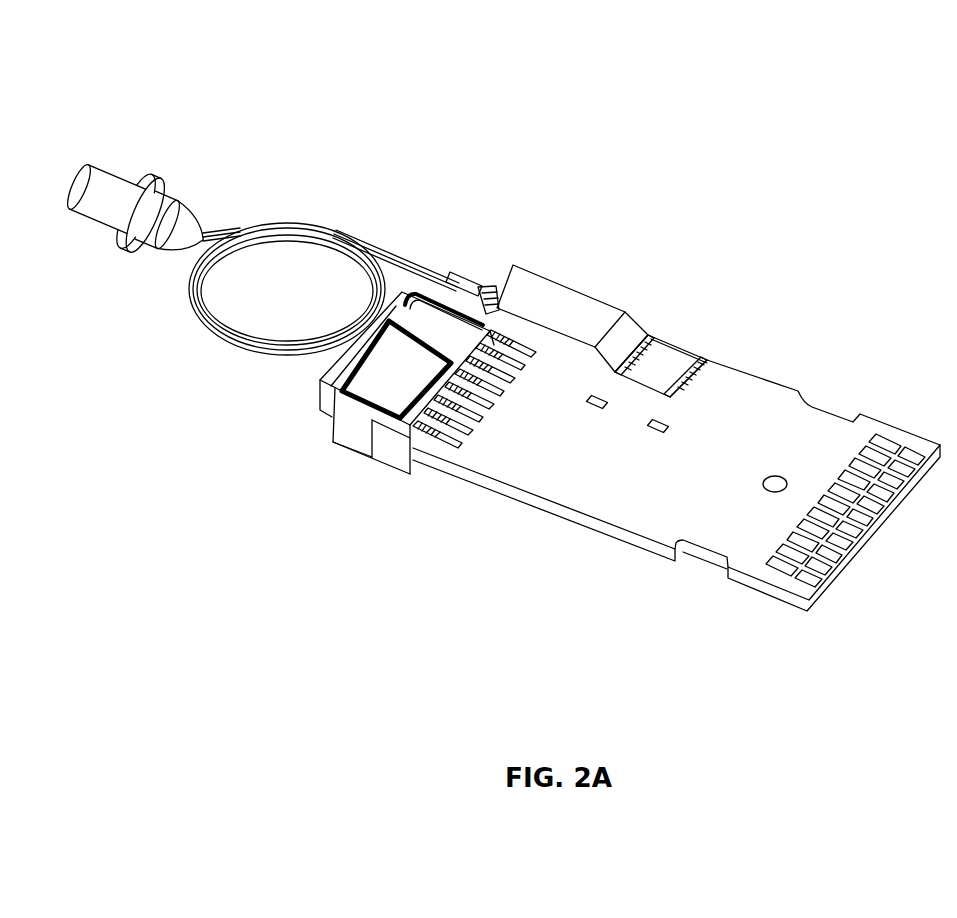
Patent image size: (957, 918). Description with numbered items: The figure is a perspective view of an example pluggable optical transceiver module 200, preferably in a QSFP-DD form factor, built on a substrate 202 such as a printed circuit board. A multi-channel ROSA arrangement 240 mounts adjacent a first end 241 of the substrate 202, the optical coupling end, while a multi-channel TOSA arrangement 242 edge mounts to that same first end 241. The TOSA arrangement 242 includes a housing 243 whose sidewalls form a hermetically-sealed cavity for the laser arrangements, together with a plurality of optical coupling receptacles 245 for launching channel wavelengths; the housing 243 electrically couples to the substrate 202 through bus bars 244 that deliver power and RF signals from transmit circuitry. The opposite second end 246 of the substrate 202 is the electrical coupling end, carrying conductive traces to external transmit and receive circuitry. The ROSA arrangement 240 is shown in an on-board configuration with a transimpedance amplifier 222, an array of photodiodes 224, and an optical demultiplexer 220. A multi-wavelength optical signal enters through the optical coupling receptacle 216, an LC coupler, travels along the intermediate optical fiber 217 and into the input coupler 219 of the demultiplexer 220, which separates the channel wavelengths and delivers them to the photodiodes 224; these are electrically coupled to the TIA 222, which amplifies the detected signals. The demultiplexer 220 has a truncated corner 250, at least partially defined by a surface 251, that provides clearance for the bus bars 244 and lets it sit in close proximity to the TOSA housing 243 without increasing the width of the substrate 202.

The optical transceiver module 200 is at (382, 100).
The substrate 202 is at (793, 377).
The optical coupling receptacle 216 is at (115, 168).
The intermediate optical fiber 217 is at (368, 243).
The input coupler 219 is at (481, 274).
The optical demultiplexer 220 is at (581, 294).
The transimpedance amplifier 222 is at (662, 388).
The array of photodiodes 224 is at (620, 374).
The multi-channel ROSA arrangement 240 is at (688, 320).
The first end 241 is at (426, 481).
The multi-channel TOSA arrangement 242 is at (400, 286).
The housing 243 is at (356, 435).
The bus bars 244 is at (415, 460).
The optical coupling receptacles 245 is at (318, 380).
The second end 246 is at (832, 603).
The truncated corner 250 is at (485, 318).
The surface 251 is at (474, 389).